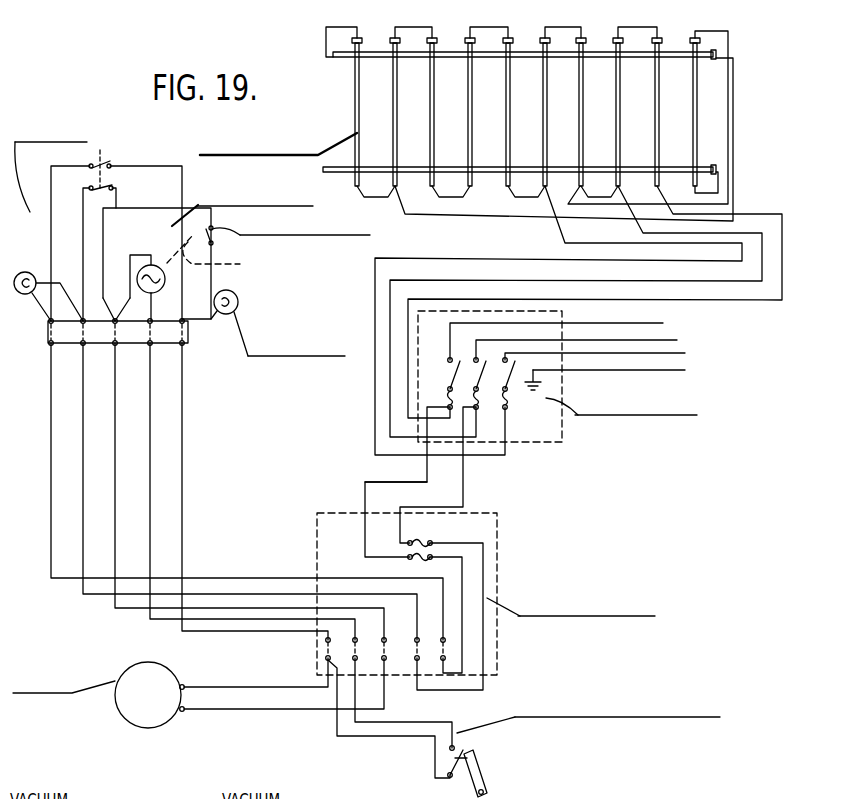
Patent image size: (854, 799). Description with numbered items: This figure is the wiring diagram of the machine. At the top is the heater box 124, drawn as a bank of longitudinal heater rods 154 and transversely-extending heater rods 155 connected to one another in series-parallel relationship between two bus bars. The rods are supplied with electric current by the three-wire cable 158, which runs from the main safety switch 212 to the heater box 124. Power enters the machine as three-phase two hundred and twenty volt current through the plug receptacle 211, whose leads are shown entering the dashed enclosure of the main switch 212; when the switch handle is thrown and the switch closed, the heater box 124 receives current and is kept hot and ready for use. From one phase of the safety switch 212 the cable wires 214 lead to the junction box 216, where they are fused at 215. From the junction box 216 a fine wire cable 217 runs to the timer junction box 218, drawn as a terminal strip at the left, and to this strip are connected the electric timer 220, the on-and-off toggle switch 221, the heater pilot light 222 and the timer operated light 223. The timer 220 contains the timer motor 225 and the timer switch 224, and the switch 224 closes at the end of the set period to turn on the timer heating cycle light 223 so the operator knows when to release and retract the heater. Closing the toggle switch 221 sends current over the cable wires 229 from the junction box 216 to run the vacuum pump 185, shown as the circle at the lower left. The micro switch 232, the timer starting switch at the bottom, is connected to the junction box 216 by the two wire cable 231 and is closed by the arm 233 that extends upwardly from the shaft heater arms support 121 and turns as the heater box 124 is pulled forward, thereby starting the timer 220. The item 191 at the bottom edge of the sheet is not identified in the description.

The heater box 124 is at (466, 124).
The longitudinal heater rods 154 is at (557, 167).
The transversely-extending heater rods 155 is at (466, 117).
The three-wire cable 158 is at (462, 299).
The plug receptacle 211 is at (685, 370).
The main safety switch 212 is at (485, 388).
The cable wires 214 is at (412, 490).
The fuses 215 is at (420, 543).
The junction box 216 is at (448, 651).
The fine wire cable 217 is at (245, 631).
The timer junction box 218 is at (188, 334).
The electric timer 220 is at (210, 228).
The toggle switch 221 is at (107, 163).
The heater pilot light 222 is at (27, 273).
The timer operated light 223 is at (236, 294).
The timer switch 224 is at (288, 233).
The timer motor 225 is at (166, 240).
The vacuum pump 185 is at (125, 700).
The cable wires 229 is at (230, 687).
The two wire cable 231 is at (387, 723).
The micro switch 232 is at (457, 741).
The arm 233 is at (501, 774).
The shaft heater arms support 121 is at (484, 792).
The vacuum line 191 is at (190, 798).